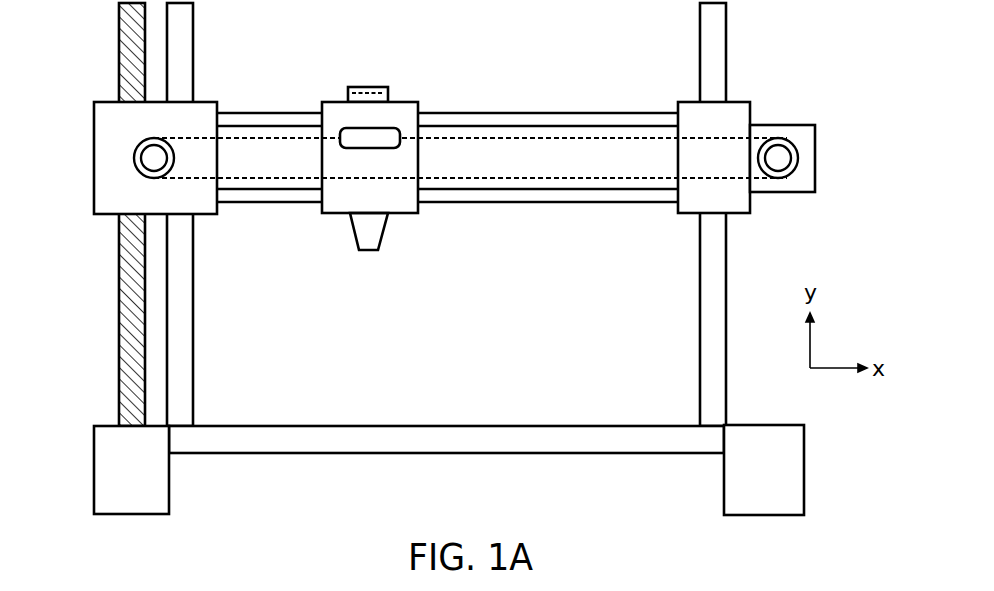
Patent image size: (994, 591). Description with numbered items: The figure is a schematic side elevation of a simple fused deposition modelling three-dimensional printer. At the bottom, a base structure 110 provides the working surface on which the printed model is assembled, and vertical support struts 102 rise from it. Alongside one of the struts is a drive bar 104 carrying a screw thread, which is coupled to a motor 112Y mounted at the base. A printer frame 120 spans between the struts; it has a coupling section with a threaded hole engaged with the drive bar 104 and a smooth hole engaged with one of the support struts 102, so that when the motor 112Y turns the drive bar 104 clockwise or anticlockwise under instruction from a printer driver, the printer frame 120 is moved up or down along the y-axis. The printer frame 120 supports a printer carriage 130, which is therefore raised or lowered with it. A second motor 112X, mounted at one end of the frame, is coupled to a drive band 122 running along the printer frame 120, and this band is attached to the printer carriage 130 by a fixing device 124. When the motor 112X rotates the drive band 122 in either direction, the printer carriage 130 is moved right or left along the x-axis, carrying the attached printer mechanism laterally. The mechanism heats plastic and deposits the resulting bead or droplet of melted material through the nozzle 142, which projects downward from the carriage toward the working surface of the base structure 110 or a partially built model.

The support struts 102 is at (194, 38).
The drive bar 104 is at (119, 27).
The base structure 110 is at (193, 393).
The motor 112X is at (807, 147).
The motor 112Y is at (131, 470).
The printer frame 120 is at (203, 215).
The drive band 122 is at (508, 138).
The fixing device 124 is at (395, 127).
The printer carriage 130 is at (422, 213).
The nozzle 142 is at (378, 250).